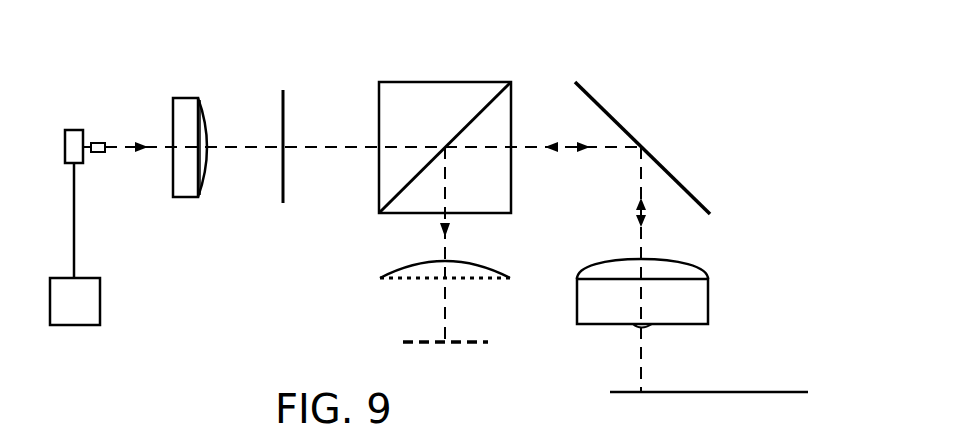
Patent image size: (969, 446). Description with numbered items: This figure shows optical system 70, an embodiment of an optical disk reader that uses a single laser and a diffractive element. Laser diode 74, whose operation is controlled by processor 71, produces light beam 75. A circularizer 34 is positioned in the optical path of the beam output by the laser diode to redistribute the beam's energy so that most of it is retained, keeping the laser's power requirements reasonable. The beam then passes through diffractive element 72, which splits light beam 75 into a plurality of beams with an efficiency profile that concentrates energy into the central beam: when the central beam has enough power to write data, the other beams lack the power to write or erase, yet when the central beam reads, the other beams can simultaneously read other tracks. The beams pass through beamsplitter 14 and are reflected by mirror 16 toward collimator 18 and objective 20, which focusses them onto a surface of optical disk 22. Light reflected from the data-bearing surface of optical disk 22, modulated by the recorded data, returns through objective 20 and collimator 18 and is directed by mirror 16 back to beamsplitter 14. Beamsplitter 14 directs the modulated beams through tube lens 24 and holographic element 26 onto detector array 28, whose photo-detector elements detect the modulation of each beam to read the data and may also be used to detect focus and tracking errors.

The beamsplitter 14 is at (428, 82).
The mirror 16 is at (677, 180).
The collimator 18 is at (180, 97).
The objective 20 is at (708, 293).
The optical disk 22 is at (722, 393).
The tube lens 24 is at (397, 267).
The holographic element 26 is at (473, 280).
The detector array 28 is at (472, 347).
The circularizer 34 is at (97, 142).
The optical system 70 is at (710, 97).
The processor 71 is at (100, 302).
The diffractive element 72 is at (282, 198).
The laser diode 74 is at (67, 158).
The light beam 75 is at (138, 138).